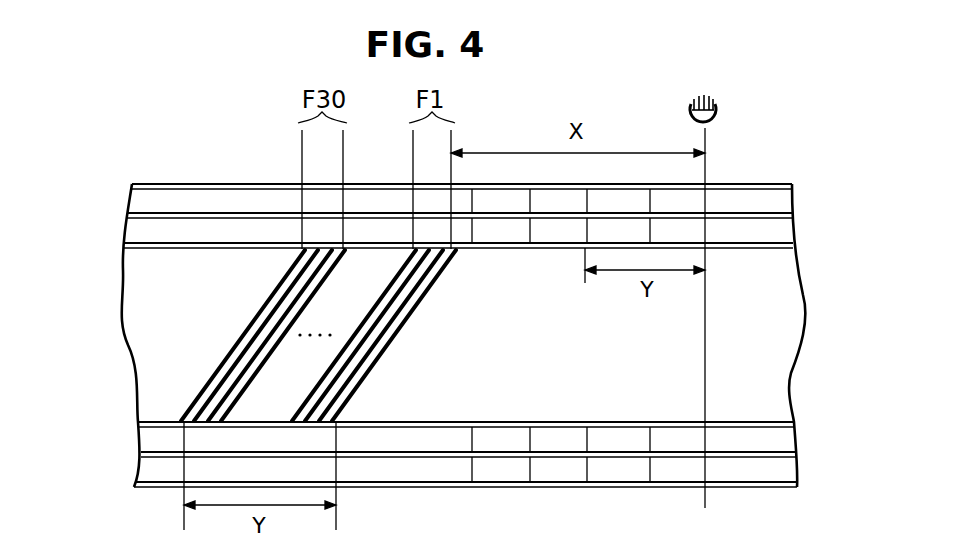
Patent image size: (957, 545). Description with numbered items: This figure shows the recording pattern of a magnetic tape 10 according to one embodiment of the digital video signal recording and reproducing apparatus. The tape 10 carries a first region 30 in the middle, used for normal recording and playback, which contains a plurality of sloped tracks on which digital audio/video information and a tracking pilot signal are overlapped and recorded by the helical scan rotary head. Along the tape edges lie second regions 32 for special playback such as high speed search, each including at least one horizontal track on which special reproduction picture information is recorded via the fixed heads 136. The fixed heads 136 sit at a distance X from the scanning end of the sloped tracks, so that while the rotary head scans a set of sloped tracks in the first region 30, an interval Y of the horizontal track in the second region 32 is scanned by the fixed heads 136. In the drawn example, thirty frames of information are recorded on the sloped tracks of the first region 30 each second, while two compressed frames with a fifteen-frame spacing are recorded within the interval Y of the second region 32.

The tape 10 is at (808, 318).
The first region 30 is at (112, 248).
The second region 32 is at (112, 185).
The fixed heads 136 is at (717, 108).